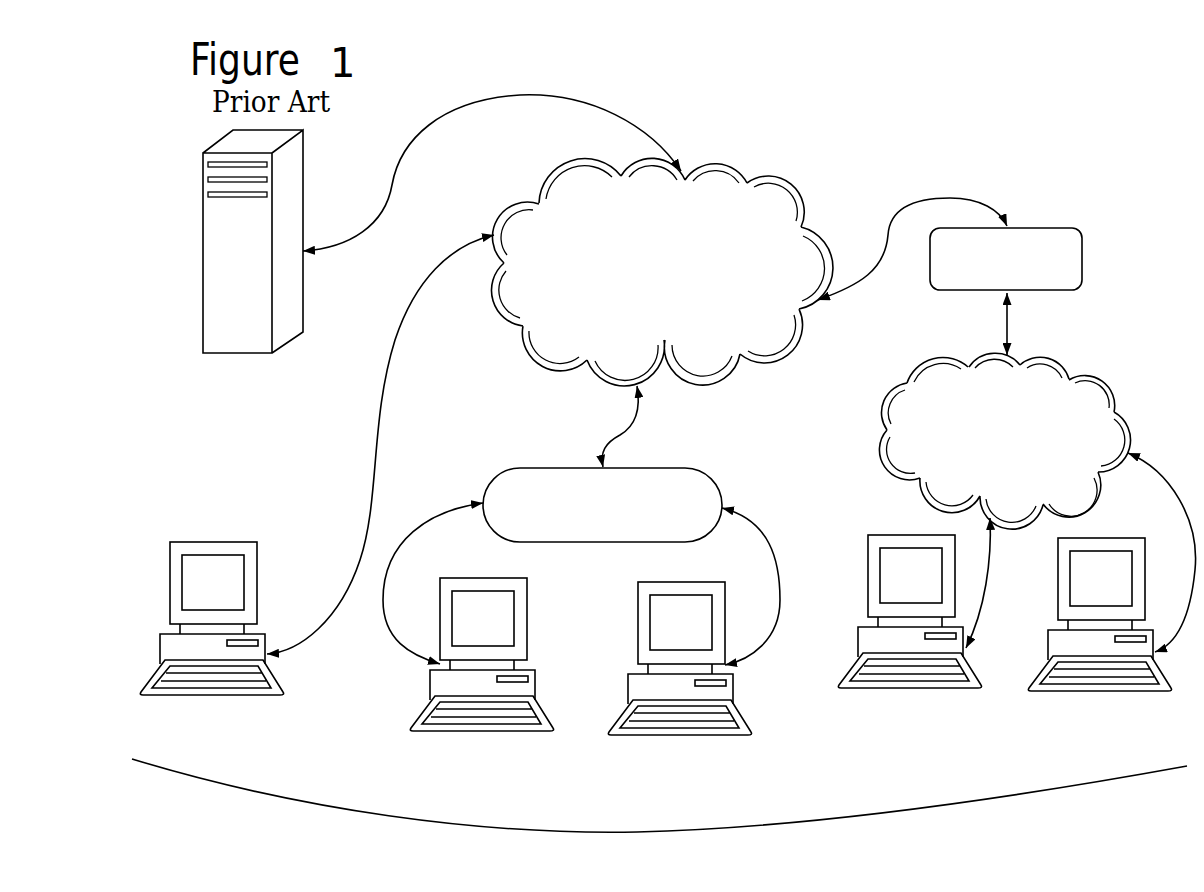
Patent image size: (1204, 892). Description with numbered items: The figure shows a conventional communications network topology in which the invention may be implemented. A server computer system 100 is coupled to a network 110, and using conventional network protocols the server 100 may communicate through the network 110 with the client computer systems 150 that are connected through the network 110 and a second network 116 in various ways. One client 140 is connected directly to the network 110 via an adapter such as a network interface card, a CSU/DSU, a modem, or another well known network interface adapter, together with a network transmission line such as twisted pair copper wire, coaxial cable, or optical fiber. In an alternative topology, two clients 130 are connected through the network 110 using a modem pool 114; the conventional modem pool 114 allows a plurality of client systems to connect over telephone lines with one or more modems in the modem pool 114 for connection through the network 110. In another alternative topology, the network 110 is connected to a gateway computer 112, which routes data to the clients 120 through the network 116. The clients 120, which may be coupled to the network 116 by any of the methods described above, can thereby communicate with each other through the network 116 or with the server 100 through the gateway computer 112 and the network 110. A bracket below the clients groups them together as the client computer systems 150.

The server computer system 100 is at (203, 163).
The network 110 is at (727, 168).
The gateway computer 112 is at (1048, 222).
The modem pool 114 is at (572, 465).
The network 116 is at (1072, 362).
The clients 120 is at (898, 533).
The clients 130 is at (428, 678).
The client 140 is at (210, 533).
The client computer systems 150 is at (659, 824).